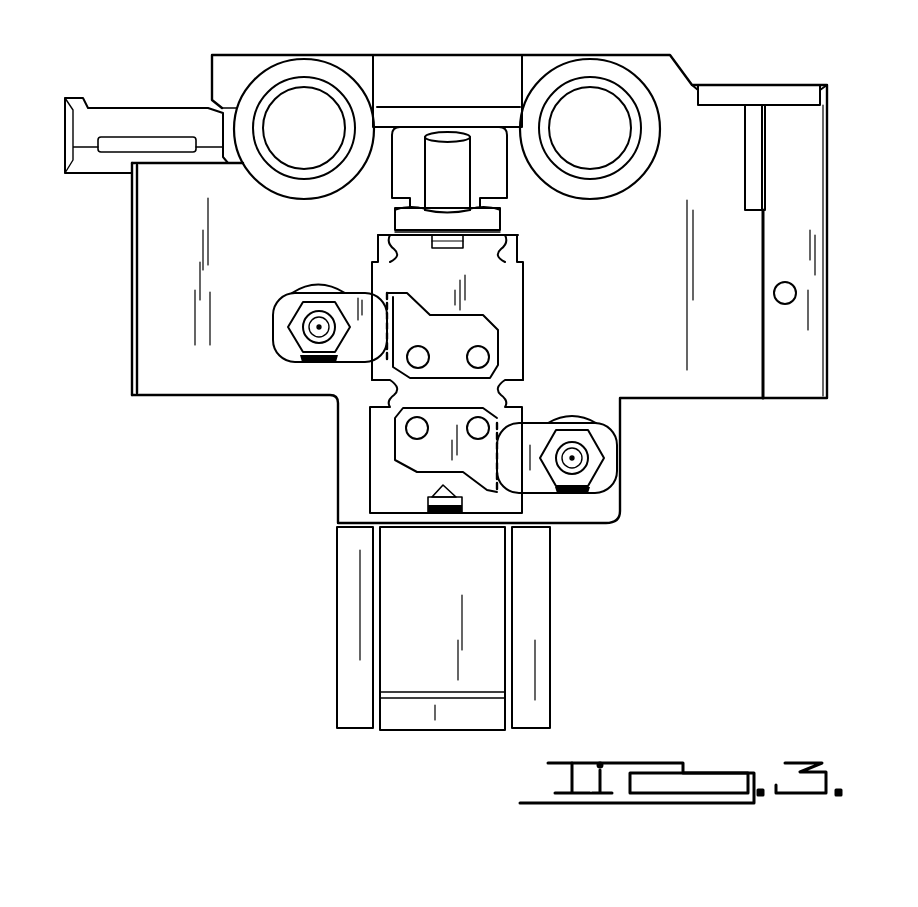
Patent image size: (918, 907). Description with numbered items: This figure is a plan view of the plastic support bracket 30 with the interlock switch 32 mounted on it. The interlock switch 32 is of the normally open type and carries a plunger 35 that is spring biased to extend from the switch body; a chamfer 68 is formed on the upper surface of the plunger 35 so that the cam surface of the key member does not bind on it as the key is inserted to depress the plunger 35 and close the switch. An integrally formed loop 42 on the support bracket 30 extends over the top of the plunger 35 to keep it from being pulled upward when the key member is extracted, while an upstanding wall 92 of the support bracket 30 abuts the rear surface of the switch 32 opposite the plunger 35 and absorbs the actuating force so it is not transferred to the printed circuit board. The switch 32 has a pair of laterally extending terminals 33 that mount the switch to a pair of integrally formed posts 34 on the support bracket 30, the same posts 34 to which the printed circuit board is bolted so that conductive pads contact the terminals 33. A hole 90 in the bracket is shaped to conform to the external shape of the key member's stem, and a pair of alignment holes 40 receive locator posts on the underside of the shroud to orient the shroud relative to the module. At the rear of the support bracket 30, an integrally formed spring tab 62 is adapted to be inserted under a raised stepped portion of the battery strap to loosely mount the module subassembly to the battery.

The support bracket 30 is at (126, 298).
The alignment holes 40 is at (311, 93).
The hole 90 is at (414, 138).
The chamfer 68 is at (446, 140).
The plunger 35 is at (455, 192).
The loop 42 is at (398, 218).
The interlock switch 32 is at (522, 305).
The terminals 33 is at (360, 345).
The posts 34 is at (318, 292).
The upstanding wall 92 is at (437, 520).
The spring tab 62 is at (412, 718).